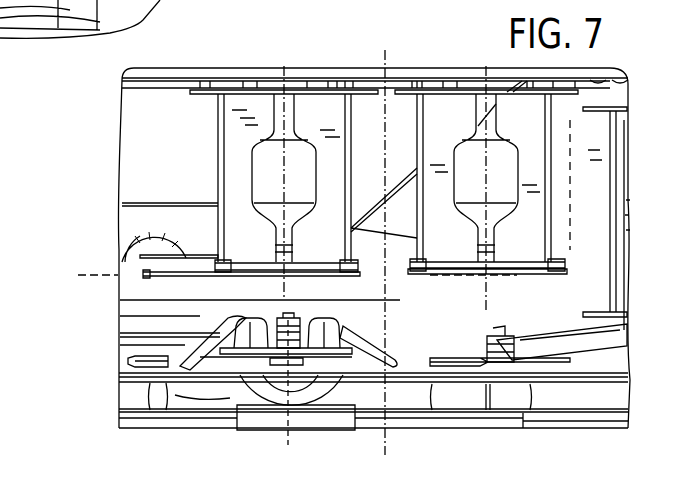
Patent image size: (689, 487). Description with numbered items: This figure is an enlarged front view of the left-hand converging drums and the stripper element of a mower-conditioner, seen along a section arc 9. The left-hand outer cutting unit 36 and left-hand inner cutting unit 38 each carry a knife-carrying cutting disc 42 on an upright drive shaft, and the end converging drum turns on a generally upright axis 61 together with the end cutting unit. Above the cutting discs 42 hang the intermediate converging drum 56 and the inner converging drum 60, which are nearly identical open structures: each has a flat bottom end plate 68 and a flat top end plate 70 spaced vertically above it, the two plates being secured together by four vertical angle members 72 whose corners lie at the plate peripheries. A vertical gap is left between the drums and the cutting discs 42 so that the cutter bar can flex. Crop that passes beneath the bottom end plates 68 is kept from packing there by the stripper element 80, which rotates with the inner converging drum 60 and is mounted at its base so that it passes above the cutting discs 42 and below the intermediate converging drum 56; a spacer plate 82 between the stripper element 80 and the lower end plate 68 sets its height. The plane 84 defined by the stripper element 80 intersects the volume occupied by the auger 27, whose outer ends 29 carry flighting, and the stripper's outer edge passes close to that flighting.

The section line 9- 9 is at (358, 50).
The auger 27 is at (133, 220).
The outer ends 29 is at (160, 302).
The left-hand outer cutting unit 36 is at (640, 337).
The left-hand inner cutting unit 38 is at (322, 445).
The knife-carrying cutting disc 42 is at (213, 348).
The intermediate converging drum 56 is at (576, 242).
The inner converging drum 60 is at (222, 50).
The upright axis 61 is at (283, 175).
The bottom end plate 68 is at (250, 262).
The top end plate 70 is at (317, 95).
The vertical angle member 72 is at (318, 113).
The stripper element 80 is at (158, 278).
The spacer plate 82 is at (210, 267).
The plane 84 is at (105, 272).